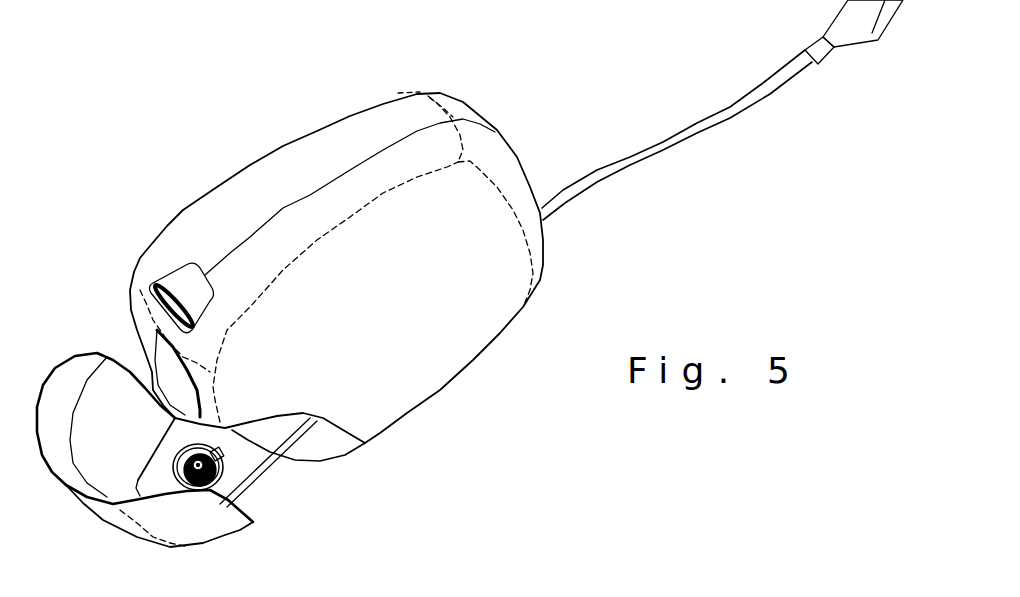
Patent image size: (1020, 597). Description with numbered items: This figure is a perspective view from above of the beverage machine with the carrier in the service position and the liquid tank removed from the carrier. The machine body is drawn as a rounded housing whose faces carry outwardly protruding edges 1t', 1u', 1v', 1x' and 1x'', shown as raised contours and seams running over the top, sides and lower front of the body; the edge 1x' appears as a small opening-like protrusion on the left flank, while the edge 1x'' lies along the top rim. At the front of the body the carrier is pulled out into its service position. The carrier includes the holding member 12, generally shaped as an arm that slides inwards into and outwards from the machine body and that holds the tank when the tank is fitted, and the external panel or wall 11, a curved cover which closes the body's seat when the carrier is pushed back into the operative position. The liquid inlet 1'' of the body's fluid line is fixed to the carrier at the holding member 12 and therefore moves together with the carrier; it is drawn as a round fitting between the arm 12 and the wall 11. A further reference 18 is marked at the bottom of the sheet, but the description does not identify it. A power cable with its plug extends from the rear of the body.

The outwardly protruding edge 1x'' is at (390, 128).
The outwardly protruding edge 1x' is at (183, 285).
The outwardly protruding edge 1v' is at (335, 292).
The outwardly protruding edge 1u' is at (495, 233).
The outwardly protruding edge 1t' is at (196, 461).
The external panel or wall 11 is at (213, 525).
The holding member 12 is at (232, 437).
The liquid inlet 1'' is at (263, 492).
The outlet 18 is at (320, 596).